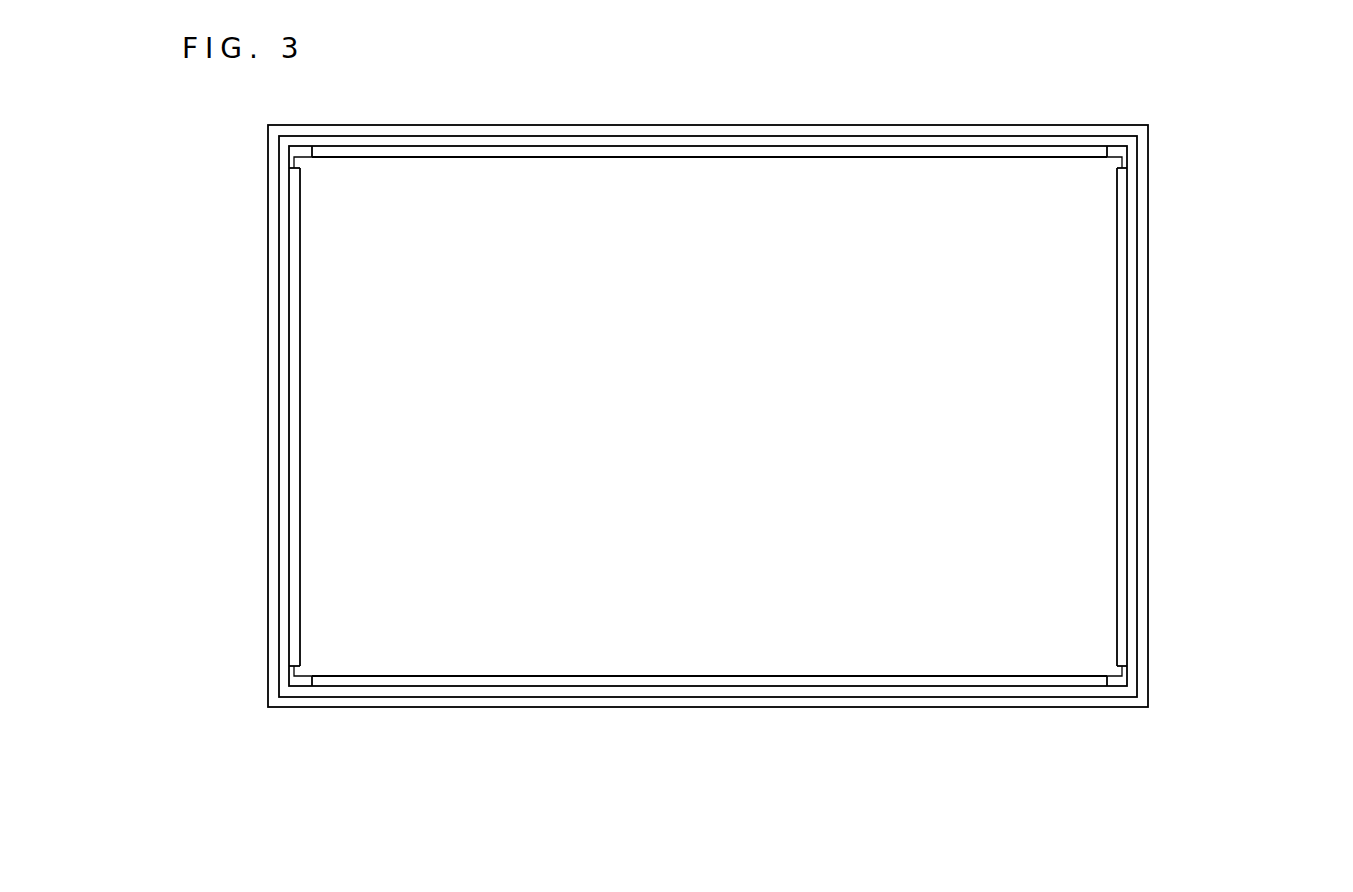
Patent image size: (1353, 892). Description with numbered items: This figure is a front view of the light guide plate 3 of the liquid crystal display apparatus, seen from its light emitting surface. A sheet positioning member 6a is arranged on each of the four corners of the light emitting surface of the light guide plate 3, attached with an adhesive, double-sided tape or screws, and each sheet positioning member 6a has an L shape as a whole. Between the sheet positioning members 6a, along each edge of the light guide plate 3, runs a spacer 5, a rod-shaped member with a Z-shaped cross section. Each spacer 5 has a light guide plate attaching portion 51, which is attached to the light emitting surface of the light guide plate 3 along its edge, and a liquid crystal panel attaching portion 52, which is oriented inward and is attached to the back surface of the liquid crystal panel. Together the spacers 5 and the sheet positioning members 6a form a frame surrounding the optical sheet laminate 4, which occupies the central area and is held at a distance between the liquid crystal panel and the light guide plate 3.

The light guide plate 3 is at (1145, 141).
The optical sheet laminate 4 is at (1027, 167).
The spacer 5 is at (709, 427).
The light guide plate attaching portion 51 is at (735, 141).
The liquid crystal panel attaching portion 52 is at (731, 73).
The sheet positioning member 6a is at (300, 140).